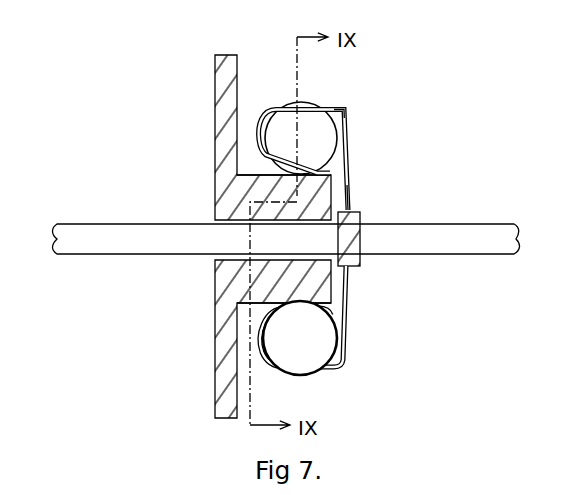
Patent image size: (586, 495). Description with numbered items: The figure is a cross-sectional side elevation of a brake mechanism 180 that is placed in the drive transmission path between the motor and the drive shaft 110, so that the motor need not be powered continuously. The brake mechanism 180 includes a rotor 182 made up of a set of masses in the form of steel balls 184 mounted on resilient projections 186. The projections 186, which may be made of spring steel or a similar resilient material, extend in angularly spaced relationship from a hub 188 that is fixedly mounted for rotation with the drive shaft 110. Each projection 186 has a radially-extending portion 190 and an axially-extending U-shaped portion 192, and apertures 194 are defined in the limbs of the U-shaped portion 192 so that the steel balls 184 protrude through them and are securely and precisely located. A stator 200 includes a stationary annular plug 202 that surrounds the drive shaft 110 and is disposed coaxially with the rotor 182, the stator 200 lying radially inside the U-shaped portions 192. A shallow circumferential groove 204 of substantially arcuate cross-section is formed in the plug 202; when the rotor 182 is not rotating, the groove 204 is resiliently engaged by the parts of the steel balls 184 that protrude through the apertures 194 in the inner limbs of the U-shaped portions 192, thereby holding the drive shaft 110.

The drive shaft 110 is at (98, 236).
The brake mechanism 180 is at (162, 142).
The rotor 182 is at (366, 235).
The steel balls 184 is at (333, 107).
The resilient projections 186 is at (313, 128).
The hub 188 is at (362, 262).
The radially-extending portions 190 is at (346, 201).
The axially-extending U-shaped portions 192 is at (258, 122).
The apertures 194 is at (343, 318).
The stator 200 is at (215, 363).
The annular plug 202 is at (265, 290).
The circumferential groove 204 is at (250, 201).